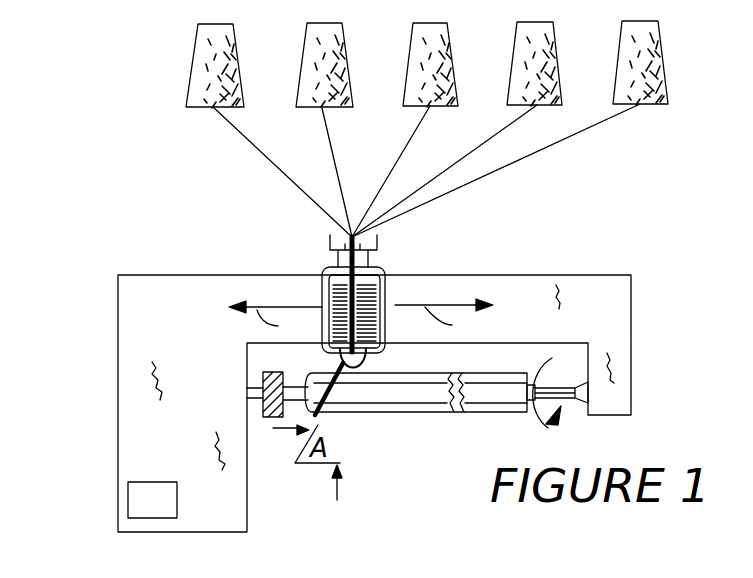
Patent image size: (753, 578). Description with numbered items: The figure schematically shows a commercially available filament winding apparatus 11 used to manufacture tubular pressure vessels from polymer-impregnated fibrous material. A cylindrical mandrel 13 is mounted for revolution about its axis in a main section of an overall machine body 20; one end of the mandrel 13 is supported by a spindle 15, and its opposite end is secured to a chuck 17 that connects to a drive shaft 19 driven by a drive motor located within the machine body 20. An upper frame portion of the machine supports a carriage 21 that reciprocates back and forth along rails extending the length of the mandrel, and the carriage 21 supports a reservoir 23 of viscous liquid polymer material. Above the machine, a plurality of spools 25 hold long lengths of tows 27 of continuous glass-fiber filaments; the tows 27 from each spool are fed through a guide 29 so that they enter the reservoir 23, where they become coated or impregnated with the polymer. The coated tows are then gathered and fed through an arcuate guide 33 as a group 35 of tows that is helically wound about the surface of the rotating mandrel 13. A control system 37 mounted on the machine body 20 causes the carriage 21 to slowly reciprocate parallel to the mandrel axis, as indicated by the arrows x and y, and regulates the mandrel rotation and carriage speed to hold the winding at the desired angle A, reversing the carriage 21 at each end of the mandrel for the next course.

The filament winding apparatus 11 is at (122, 212).
The cylindrical mandrel 13 is at (433, 393).
The spindle 15 is at (553, 388).
The chuck 17 is at (270, 418).
The drive shaft 19 is at (255, 405).
The machine body 20 is at (142, 432).
The carriage 21 is at (354, 283).
The reservoir 23 is at (329, 320).
The spools 25 is at (196, 72).
The tows 27 is at (263, 160).
The guide 29 is at (380, 243).
The arcuate guide 33 is at (380, 363).
The group of tows 35 is at (330, 397).
The control system 37 is at (170, 513).